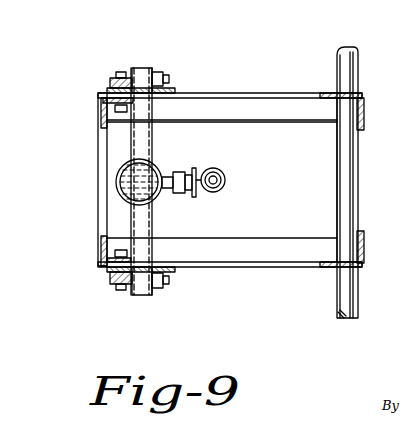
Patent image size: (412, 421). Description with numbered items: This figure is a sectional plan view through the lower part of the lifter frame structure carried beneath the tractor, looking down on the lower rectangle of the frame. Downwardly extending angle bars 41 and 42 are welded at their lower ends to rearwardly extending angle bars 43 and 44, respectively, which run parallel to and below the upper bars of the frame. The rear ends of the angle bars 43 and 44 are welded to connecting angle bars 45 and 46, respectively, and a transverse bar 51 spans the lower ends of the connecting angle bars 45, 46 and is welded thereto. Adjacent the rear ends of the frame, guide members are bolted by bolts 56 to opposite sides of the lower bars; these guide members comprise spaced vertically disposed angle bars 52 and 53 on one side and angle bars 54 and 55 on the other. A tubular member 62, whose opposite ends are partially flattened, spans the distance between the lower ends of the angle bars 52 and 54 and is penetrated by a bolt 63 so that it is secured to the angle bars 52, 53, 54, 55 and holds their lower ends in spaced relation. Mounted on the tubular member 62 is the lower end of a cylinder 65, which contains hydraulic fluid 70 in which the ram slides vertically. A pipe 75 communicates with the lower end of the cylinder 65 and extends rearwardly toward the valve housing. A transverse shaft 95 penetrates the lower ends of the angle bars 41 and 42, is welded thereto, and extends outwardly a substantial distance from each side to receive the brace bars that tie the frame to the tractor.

The angle bar 41 is at (364, 112).
The angle bar 42 is at (364, 247).
The angle bar 43 is at (298, 120).
The angle bar 44 is at (300, 244).
The connecting angle bar 45 is at (107, 100).
The connecting angle bar 46 is at (108, 252).
The transverse bar 51 is at (100, 204).
The angle bar 52 is at (135, 68).
The angle bar 53 is at (172, 90).
The angle bar 54 is at (132, 290).
The angle bar 55 is at (156, 296).
The bolts 56 is at (118, 84).
The tubular member 62 is at (153, 222).
The bolt 63 is at (165, 76).
The cylinder 65 is at (160, 168).
The hydraulic fluid 70 is at (162, 196).
The pipe 75 is at (226, 180).
The transverse shaft 95 is at (358, 74).